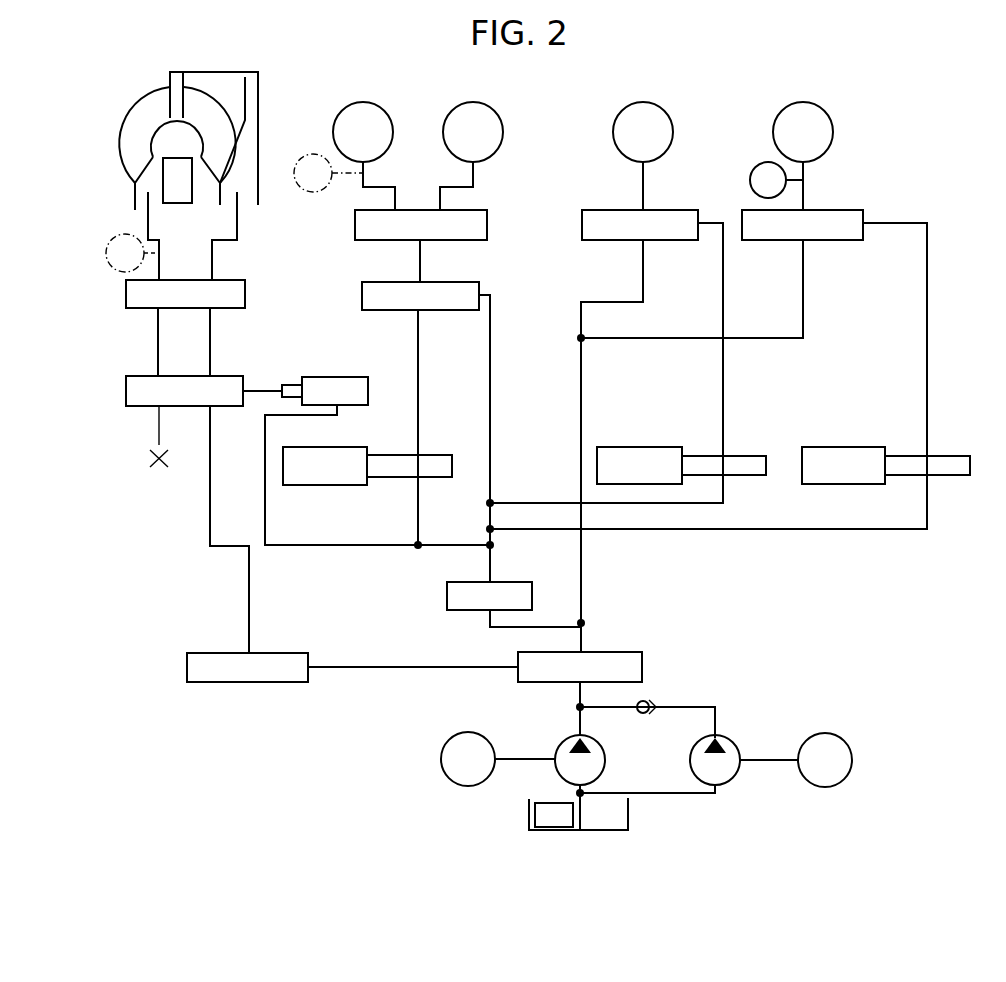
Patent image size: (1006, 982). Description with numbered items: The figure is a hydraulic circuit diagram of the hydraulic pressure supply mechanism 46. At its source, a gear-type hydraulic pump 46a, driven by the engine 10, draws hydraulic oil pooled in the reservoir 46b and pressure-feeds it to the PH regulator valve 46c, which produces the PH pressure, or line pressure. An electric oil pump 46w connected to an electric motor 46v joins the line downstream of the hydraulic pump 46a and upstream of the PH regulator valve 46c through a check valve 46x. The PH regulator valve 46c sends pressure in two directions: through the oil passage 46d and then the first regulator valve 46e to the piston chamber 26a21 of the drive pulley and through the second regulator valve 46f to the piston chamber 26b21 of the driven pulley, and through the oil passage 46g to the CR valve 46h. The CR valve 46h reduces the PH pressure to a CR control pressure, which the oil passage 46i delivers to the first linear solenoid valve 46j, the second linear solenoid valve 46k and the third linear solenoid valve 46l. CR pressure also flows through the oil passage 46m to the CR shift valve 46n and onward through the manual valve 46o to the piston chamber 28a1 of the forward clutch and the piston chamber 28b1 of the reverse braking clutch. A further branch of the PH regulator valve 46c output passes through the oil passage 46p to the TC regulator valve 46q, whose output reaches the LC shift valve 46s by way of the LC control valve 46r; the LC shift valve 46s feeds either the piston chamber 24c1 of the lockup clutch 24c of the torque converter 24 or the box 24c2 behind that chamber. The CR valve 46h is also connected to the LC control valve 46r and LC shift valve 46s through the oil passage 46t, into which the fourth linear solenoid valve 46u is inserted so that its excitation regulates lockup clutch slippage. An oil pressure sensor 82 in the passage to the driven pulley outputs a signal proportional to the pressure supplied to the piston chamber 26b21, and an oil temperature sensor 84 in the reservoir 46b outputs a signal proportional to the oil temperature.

The engine 10 is at (470, 733).
The torque converter 24 is at (105, 121).
The lockup clutch 24c is at (247, 90).
The piston chamber 24c1 is at (214, 70).
The box 24c2 is at (247, 200).
The piston chamber (DR) 26a21 is at (673, 132).
The piston chamber (DN) 26b21 is at (833, 132).
The piston chamber (FWD) 28a1 is at (366, 103).
The piston chamber (RVS) 28b1 is at (503, 132).
The hydraulic pressure supply mechanism 46 is at (690, 579).
The hydraulic pump 46a is at (605, 760).
The reservoir 46b is at (628, 815).
The PH regulator valve 46c is at (605, 652).
The oil passage 46d is at (582, 570).
The first regulator valve (DR REG VLV) 46e is at (660, 210).
The second regulator valve (DN REG VLV) 46f is at (828, 210).
The oil passage 46g is at (508, 628).
The CR valve 46h is at (505, 582).
The oil passage 46i is at (490, 567).
The first linear solenoid valve (LS-DR) 46j is at (652, 447).
The second linear solenoid valve (LS-DN) 46k is at (852, 447).
The third linear solenoid valve (LS-CPC) 46l is at (345, 446).
The oil passage 46m is at (418, 372).
The CR shift valve 46n is at (479, 290).
The manual valve 46o is at (487, 222).
The oil passage 46p is at (378, 665).
The TC regulator valve 46q is at (272, 653).
The LC control valve 46r is at (224, 374).
The LC shift valve 46s is at (245, 297).
The oil passage 46t is at (334, 545).
The fourth linear solenoid valve (LS-LC) 46u is at (335, 376).
The electric motor 46v is at (846, 740).
The electric oil pump 46w is at (733, 738).
The check valve 46x is at (651, 713).
The oil pressure sensor 82 is at (112, 242).
The oil temperature sensor 84 is at (550, 800).